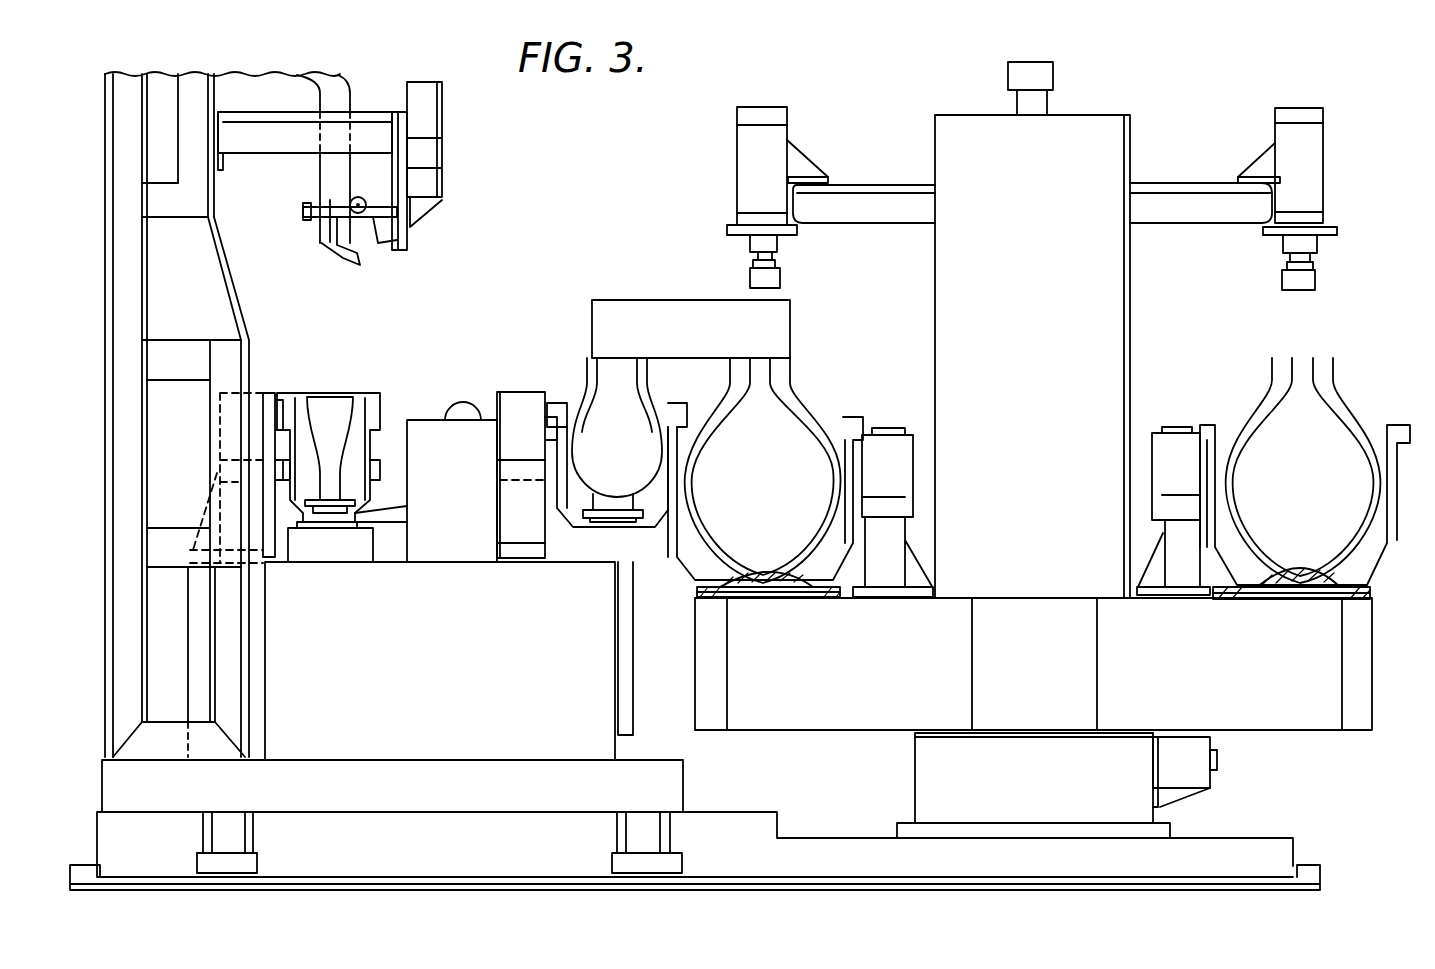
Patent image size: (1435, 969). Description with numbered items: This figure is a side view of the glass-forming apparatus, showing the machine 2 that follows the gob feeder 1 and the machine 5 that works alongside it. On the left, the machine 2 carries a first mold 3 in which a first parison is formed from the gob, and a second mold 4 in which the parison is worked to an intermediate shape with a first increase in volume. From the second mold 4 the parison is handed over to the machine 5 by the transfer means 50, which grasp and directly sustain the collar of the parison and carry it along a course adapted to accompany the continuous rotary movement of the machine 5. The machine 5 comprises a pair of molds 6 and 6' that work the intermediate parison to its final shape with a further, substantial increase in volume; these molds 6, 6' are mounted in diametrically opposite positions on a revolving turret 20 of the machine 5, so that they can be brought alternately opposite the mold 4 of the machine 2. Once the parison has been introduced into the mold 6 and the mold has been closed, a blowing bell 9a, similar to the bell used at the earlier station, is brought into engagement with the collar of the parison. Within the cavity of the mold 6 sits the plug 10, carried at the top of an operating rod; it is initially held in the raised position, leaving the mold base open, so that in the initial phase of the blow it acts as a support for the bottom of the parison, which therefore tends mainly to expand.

The gob feeder 1 is at (320, 243).
The machine 2 is at (425, 668).
The first mold 3 is at (380, 393).
The second mold 4 is at (588, 382).
The machine 5 is at (955, 288).
The mold 6 is at (765, 469).
The mold 6' is at (1305, 468).
The blowing bell 9a is at (750, 278).
The plug 10 is at (697, 584).
The revolving turret 20 is at (880, 672).
The transfer means 50 is at (695, 338).